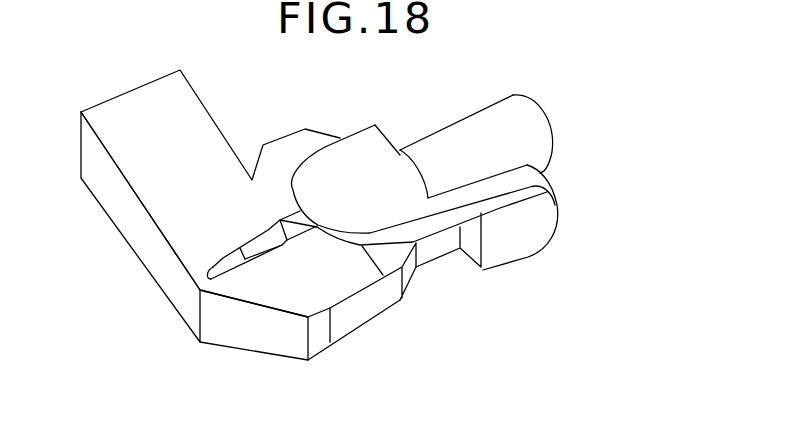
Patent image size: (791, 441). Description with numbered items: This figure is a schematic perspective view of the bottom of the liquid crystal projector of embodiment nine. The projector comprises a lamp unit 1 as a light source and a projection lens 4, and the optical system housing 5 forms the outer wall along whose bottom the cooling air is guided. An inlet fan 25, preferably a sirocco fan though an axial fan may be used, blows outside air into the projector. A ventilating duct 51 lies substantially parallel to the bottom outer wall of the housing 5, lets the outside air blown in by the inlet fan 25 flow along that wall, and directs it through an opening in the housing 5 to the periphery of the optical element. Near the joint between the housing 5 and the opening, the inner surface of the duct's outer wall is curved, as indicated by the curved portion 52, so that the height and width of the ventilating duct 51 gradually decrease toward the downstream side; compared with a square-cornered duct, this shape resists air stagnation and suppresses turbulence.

The lamp unit 1 is at (87, 192).
The projection lens 4 is at (547, 124).
The optical system housing 5 is at (200, 247).
The inlet fan 25 is at (557, 230).
The ventilating duct 51 is at (287, 218).
The curved inner surface 52 is at (230, 263).